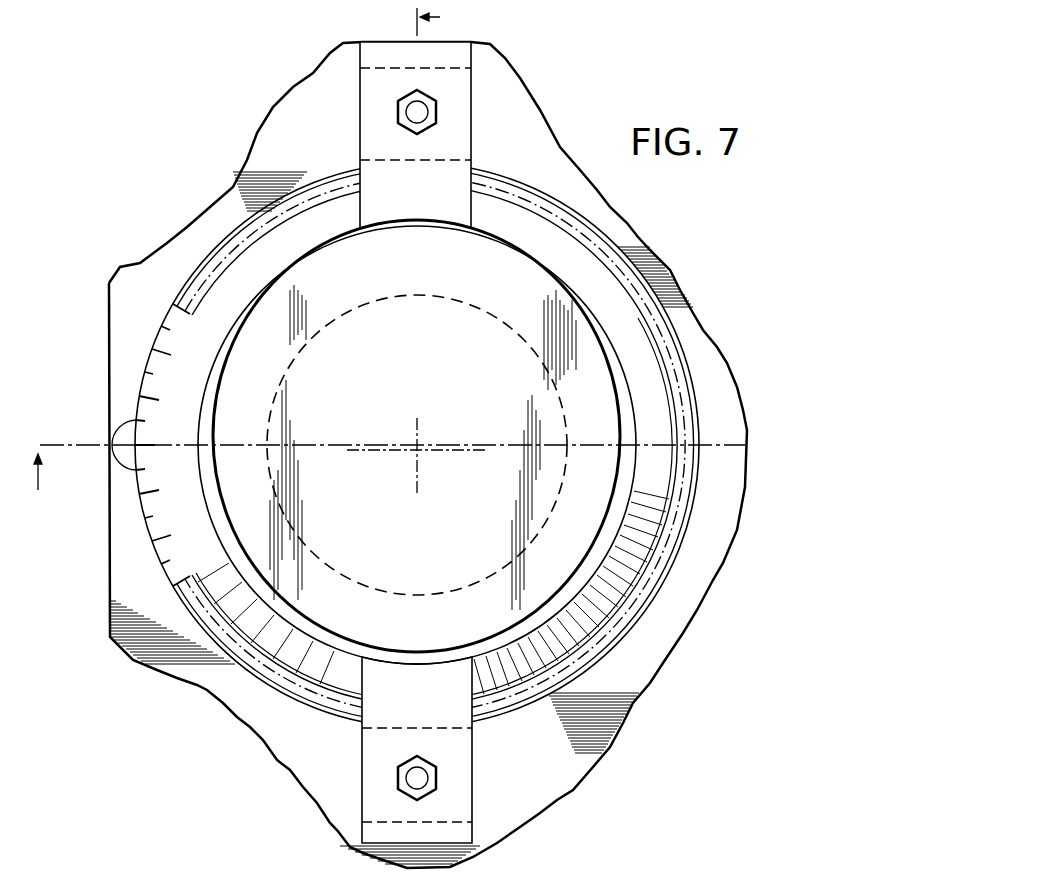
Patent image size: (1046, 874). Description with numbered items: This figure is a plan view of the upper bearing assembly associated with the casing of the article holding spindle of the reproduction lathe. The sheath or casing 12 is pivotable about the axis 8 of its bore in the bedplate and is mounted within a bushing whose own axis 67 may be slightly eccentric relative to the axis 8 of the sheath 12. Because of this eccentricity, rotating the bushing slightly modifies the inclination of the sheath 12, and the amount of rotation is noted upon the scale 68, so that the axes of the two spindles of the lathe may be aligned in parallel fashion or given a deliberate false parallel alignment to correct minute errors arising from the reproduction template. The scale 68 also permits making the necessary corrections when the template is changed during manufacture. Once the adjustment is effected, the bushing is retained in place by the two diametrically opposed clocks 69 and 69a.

The axis 8 is at (418, 448).
The sheath or casing 12 is at (600, 493).
The axis of the bushing 67 is at (418, 445).
The scale 68 is at (173, 326).
The clock 69 is at (471, 105).
The clock 69a is at (472, 748).